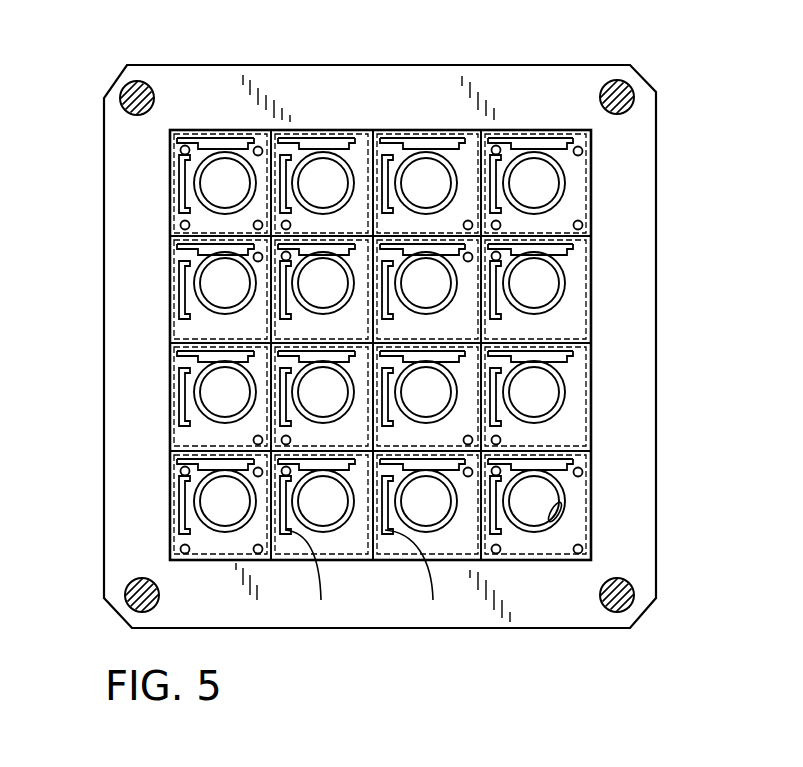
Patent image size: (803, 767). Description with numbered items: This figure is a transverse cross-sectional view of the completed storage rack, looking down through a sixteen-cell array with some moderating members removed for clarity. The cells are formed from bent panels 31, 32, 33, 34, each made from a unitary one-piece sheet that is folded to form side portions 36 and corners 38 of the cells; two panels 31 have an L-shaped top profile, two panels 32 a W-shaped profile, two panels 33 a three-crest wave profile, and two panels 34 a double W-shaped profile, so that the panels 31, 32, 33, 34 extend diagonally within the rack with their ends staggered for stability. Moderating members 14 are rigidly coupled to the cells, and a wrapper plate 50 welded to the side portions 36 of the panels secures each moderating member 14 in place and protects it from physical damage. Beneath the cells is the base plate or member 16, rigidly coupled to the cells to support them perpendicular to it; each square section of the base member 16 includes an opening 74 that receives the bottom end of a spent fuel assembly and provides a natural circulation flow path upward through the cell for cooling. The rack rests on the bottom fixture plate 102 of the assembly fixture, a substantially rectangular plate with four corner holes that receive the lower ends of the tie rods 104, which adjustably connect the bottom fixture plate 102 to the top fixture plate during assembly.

The bottom fixture plate 102 is at (357, 628).
The tie rods 104 is at (130, 85).
The base plate or member 16 is at (187, 128).
The moderating members 14 is at (170, 188).
The panels having an L-shaped top profile 31 is at (210, 128).
The panels having a W-shaped top profile 32 is at (327, 128).
The panels having a three crest wave shaped top profile 33 is at (425, 128).
The panels having a double W-shaped top profile 34 is at (540, 128).
The side portions 36 is at (170, 170).
The corners 38 is at (170, 131).
The wrapper plate 50 is at (374, 570).
The opening 74 is at (557, 520).